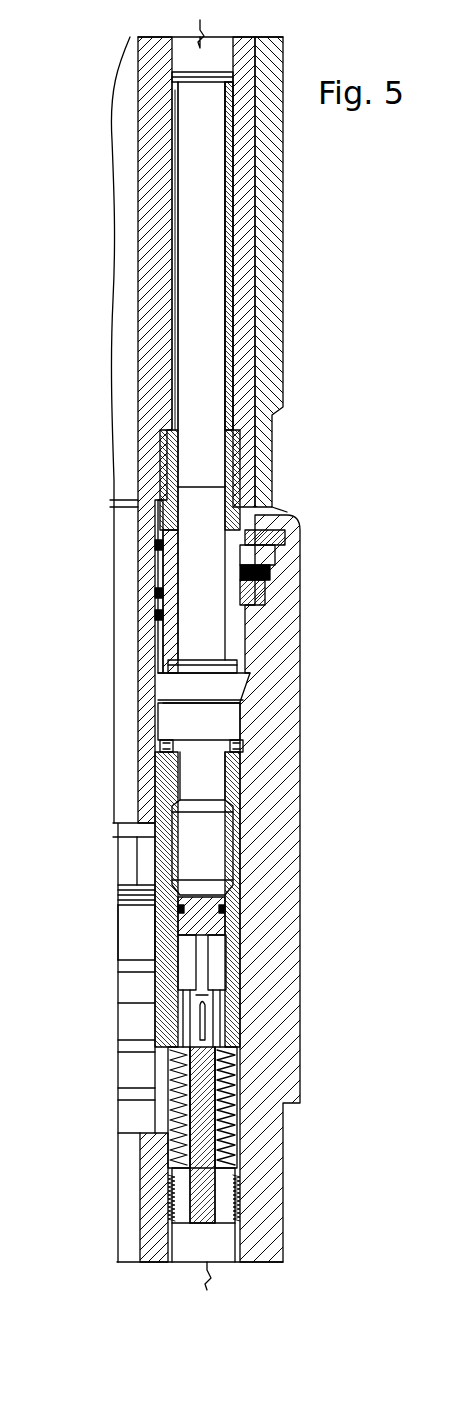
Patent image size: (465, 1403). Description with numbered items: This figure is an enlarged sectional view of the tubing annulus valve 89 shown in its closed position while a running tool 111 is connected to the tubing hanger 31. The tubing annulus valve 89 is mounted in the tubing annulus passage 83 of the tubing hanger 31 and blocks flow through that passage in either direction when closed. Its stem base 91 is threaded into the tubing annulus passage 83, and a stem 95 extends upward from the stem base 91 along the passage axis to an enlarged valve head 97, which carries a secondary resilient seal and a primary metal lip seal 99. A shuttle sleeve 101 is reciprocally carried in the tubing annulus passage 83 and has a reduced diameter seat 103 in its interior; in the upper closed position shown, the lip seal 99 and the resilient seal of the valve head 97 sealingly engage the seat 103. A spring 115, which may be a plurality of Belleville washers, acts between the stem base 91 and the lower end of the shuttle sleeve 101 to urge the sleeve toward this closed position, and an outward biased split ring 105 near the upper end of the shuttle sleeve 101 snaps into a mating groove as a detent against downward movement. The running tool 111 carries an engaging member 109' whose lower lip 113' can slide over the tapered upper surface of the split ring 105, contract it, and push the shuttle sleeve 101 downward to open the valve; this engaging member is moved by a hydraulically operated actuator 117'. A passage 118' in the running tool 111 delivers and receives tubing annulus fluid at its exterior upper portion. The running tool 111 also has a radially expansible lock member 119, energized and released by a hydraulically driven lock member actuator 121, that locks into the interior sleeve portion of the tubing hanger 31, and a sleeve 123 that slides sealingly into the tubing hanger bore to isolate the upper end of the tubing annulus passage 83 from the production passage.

The running tool 111 is at (327, 199).
The passage 118' is at (139, 366).
The actuator 117' is at (139, 306).
The lock member actuator 121 is at (273, 328).
The lock member 119 is at (260, 535).
The engaging member 109' is at (104, 581).
The sleeve 123 is at (145, 643).
The lip 113' is at (137, 602).
The tubing annulus passage 83 is at (228, 720).
The split ring 105 is at (243, 748).
The tubing hanger 31 is at (293, 797).
The valve head 97 is at (205, 897).
The seat 103 is at (228, 913).
The tubing annulus valve 89 is at (240, 932).
The shuttle sleeve 101 is at (167, 905).
The lip seal 99 is at (167, 920).
The spring 115 is at (173, 1098).
The stem 95 is at (173, 1150).
The stem base 91 is at (240, 1198).